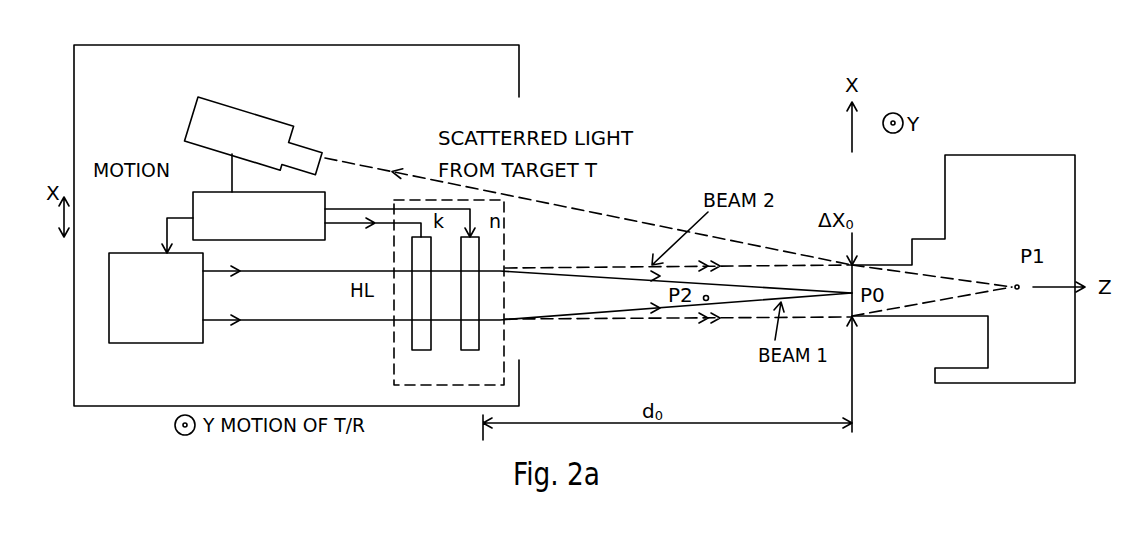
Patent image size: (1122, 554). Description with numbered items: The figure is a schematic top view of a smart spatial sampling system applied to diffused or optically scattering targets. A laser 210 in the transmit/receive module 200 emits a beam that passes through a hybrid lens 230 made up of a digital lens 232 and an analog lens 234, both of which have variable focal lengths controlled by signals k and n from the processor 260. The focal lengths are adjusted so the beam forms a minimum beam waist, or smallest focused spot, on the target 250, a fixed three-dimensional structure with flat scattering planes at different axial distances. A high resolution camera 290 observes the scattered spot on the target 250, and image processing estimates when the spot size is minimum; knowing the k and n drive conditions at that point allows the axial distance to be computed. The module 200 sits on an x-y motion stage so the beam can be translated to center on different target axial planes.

The transmit/receive module 200 is at (519, 97).
The laser 210 is at (137, 257).
The hybrid lens 230 is at (456, 292).
The digital lens 232 is at (416, 344).
The analog lens 234 is at (476, 338).
The target 250 is at (1063, 208).
The processor 260 is at (193, 196).
The camera 290 is at (270, 127).